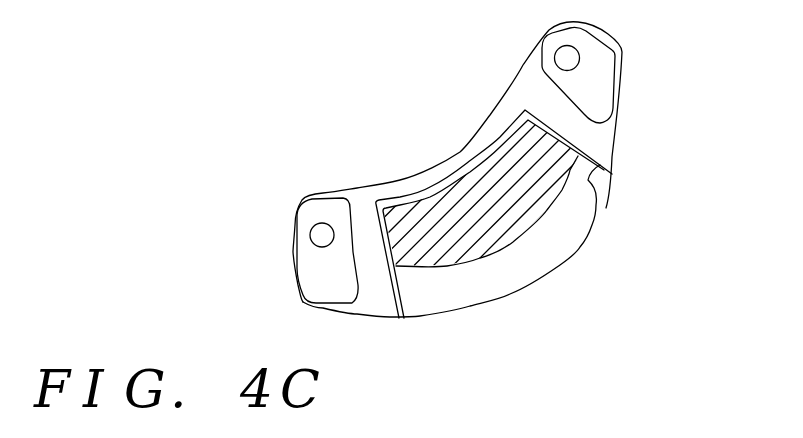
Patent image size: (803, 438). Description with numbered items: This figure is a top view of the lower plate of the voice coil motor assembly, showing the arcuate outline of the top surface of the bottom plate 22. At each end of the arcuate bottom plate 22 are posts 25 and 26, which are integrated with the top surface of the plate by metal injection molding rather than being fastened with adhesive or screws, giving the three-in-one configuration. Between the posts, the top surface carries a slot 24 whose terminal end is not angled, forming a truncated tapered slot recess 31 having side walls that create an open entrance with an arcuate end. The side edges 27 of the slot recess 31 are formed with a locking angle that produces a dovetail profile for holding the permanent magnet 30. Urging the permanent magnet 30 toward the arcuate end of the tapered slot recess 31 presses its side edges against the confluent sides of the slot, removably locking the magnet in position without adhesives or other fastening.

The bottom plate 22 is at (515, 86).
The slot 24 is at (450, 187).
The post 25 is at (335, 212).
The post 26 is at (602, 65).
The side edges 27 is at (606, 208).
The permanent magnet 30 is at (535, 197).
The slot recess 31 is at (513, 274).